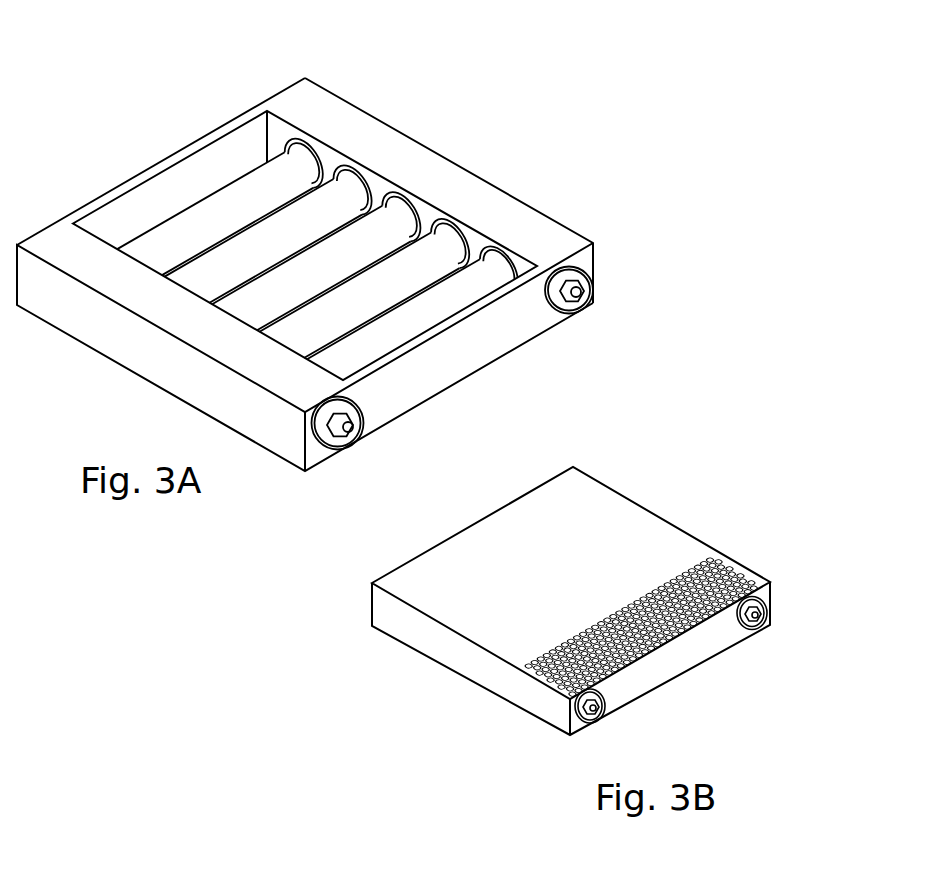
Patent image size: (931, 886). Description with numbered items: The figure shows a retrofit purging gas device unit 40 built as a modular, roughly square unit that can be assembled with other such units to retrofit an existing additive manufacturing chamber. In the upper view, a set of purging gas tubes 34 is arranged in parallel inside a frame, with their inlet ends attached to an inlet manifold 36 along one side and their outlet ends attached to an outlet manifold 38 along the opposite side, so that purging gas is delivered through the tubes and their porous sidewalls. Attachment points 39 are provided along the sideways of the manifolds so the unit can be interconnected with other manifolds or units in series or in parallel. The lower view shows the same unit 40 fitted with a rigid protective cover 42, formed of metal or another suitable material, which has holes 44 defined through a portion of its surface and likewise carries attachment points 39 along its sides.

In FIG. 3A, the purging gas tubes 34 is at (388, 220).
In FIG. 3A, the inlet manifold 36 is at (135, 296).
In FIG. 3A, the outlet manifold 38 is at (517, 221).
In FIG. 3A, the attachment points 39 is at (332, 445).
In FIG. 3B, the attachment points 39 is at (763, 635).
In FIG. 3A, the retrofit purging gas device unit 40 is at (380, 76).
In FIG. 3B, the retrofit purging gas device unit 40 is at (412, 680).
In FIG. 3B, the rigid protective cover 42 is at (575, 499).
In FIG. 3B, the holes 44 is at (667, 575).